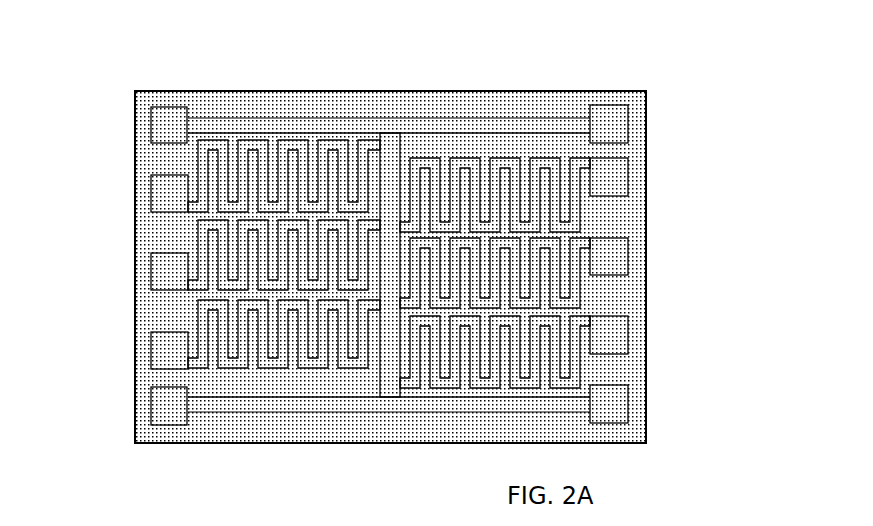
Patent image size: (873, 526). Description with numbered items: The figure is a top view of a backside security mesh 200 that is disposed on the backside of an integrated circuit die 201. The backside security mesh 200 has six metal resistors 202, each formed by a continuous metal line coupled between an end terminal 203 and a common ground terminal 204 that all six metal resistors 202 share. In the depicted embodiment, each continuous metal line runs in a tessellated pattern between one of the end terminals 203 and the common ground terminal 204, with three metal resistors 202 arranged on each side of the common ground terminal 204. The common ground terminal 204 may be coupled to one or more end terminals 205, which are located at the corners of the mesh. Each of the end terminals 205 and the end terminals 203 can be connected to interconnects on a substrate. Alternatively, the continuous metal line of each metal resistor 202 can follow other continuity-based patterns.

The backside security mesh 200 is at (83, 51).
The integrated circuit die 201 is at (238, 91).
The metal resistor 202 is at (197, 157).
The end terminal 203 is at (160, 190).
The common ground terminal 204 is at (400, 127).
The end terminal 205 is at (160, 115).